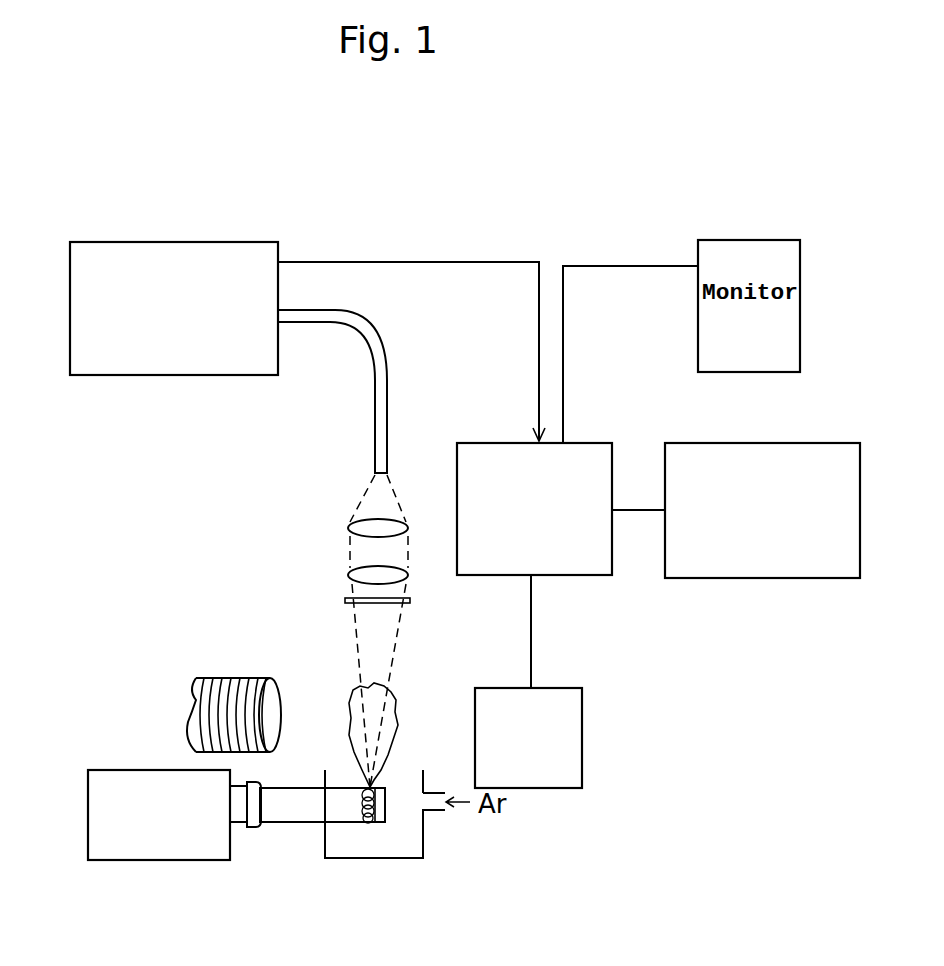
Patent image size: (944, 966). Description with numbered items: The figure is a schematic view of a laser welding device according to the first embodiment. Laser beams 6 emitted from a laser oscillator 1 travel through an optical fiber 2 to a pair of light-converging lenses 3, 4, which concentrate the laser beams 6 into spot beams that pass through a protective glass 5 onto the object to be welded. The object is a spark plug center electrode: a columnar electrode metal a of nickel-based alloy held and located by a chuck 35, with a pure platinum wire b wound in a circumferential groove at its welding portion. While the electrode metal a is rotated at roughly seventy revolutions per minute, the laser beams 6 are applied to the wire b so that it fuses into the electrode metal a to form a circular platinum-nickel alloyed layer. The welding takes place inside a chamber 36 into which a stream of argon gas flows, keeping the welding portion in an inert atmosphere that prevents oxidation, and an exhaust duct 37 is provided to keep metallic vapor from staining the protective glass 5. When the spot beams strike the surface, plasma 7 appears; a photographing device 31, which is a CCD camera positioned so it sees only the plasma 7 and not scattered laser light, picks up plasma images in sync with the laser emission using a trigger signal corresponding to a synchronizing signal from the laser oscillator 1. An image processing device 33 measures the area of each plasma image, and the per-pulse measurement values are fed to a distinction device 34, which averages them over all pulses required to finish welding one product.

The laser oscillator 1 is at (88, 360).
The optical fiber 2 is at (385, 368).
The light-converging lens 3 is at (350, 525).
The light-converging lens 4 is at (350, 578).
The protective glass 5 is at (345, 601).
The laser beams 6 is at (362, 632).
The plasma 7 is at (356, 738).
The photographing device 31 is at (563, 778).
The image processing device 33 is at (467, 458).
The distinction device 34 is at (832, 462).
The chuck 35 is at (98, 778).
The chamber 36 is at (425, 820).
The exhaust duct 37 is at (250, 680).
The electrode metal a is at (287, 815).
The wire b is at (382, 772).